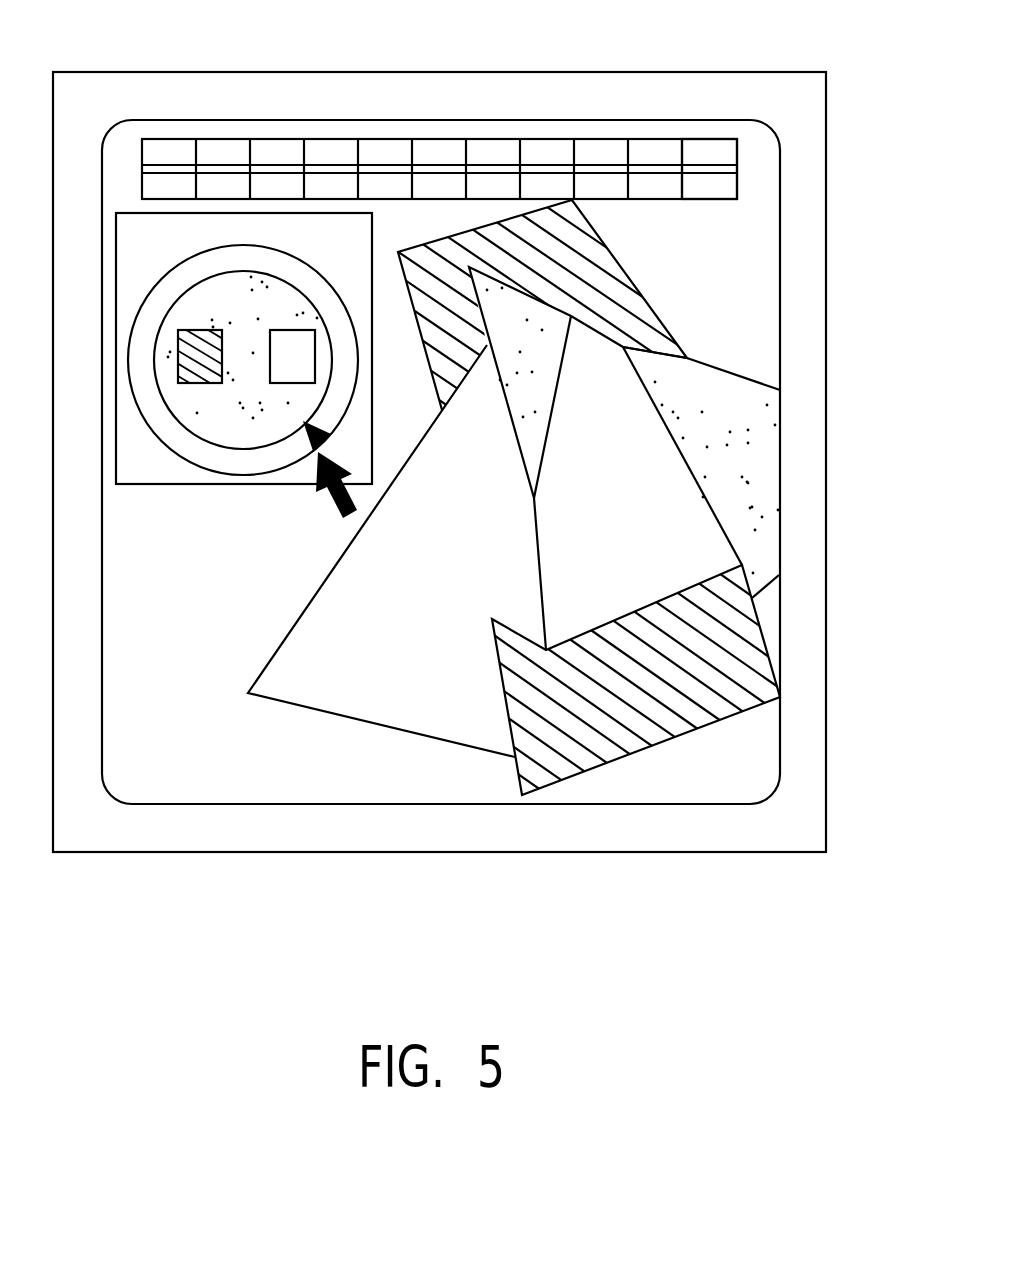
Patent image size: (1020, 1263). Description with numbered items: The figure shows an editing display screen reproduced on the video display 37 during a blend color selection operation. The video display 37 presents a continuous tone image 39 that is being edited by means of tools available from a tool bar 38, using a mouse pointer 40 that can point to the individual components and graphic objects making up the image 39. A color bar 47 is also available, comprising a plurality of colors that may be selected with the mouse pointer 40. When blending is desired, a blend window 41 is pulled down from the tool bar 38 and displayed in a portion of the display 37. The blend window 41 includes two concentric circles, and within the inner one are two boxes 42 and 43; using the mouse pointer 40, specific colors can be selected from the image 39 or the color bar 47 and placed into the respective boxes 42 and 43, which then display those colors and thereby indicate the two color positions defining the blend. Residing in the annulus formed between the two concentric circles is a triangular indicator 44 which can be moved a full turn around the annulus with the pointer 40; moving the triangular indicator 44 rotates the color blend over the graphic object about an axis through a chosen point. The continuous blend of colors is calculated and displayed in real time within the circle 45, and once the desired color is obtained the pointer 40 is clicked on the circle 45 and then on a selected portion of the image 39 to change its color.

The video display 37 is at (628, 72).
The tool bar 38 is at (327, 139).
The continuous tone image 39 is at (300, 750).
The mouse pointer 40 is at (340, 508).
The blend window 41 is at (116, 244).
The box 42 is at (178, 347).
The box 43 is at (275, 383).
The triangular indicator 44 is at (305, 437).
The circle 45 is at (242, 433).
The color bar 47 is at (712, 200).